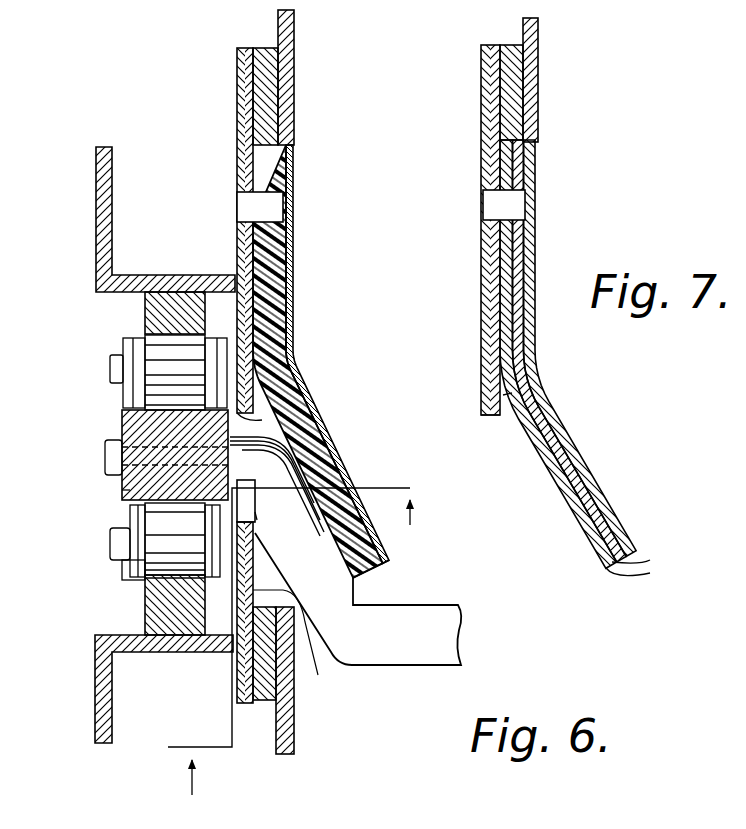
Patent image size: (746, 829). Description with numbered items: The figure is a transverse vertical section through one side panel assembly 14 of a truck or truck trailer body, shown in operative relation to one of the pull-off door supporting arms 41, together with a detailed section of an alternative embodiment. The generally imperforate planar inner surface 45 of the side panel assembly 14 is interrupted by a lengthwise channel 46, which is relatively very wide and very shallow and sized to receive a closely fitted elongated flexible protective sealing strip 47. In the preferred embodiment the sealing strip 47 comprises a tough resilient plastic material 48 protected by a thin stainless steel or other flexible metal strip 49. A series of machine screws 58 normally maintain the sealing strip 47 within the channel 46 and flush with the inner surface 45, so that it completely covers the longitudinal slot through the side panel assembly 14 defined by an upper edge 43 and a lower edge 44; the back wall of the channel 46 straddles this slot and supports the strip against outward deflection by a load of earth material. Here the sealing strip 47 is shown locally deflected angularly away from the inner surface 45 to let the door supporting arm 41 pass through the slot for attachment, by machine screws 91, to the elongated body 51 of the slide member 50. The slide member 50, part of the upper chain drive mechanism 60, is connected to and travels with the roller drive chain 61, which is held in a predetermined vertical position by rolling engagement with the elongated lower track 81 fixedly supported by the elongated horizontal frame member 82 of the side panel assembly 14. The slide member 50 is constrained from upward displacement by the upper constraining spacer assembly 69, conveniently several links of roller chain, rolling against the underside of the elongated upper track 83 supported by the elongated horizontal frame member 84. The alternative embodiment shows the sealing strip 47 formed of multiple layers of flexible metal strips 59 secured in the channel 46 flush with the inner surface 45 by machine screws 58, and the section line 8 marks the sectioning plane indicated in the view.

In FIG. 6, the side panel assembly 14 is at (297, 48).
In FIG. 7, the side panel assembly 14 is at (545, 48).
In FIG. 6, the inner surface 45 is at (290, 108).
In FIG. 7, the inner surface 45 is at (535, 108).
In FIG. 6, the machine screws 58 is at (270, 208).
In FIG. 7, the machine screws 58 is at (518, 205).
In FIG. 6, the flexible metal strip 49 is at (291, 288).
In FIG. 6, the resilient plastic material 48 is at (273, 328).
In FIG. 6, the lengthwise channel 46 is at (250, 404).
In FIG. 7, the lengthwise channel 46 is at (503, 395).
In FIG. 6, the upper edge 43 is at (266, 420).
In FIG. 7, the upper edge 43 is at (479, 417).
In FIG. 6, the flexible protective sealing strip 47 is at (336, 440).
In FIG. 7, the flexible protective sealing strip 47 is at (602, 470).
In FIG. 6, the lower edge 44 is at (255, 512).
In FIG. 6, the section line 8- 8 is at (293, 655).
In FIG. 6, the pull-off door supporting arm 41 is at (418, 614).
In FIG. 6, the elongated horizontal frame member 84 is at (105, 215).
In FIG. 6, the elongated upper track 83 is at (157, 318).
In FIG. 6, the upper constraining spacer assembly 69 is at (123, 352).
In FIG. 6, the slide member 50 is at (112, 419).
In FIG. 6, the machine screws 91 is at (105, 455).
In FIG. 6, the elongated body 51 is at (125, 490).
In FIG. 6, the upper chain drive mechanism 60 is at (103, 545).
In FIG. 6, the roller drive chain 61 is at (122, 570).
In FIG. 6, the elongated lower track 81 is at (150, 603).
In FIG. 6, the elongated horizontal frame member 82 is at (112, 718).
In FIG. 7, the flexible metal strips 59 is at (615, 565).